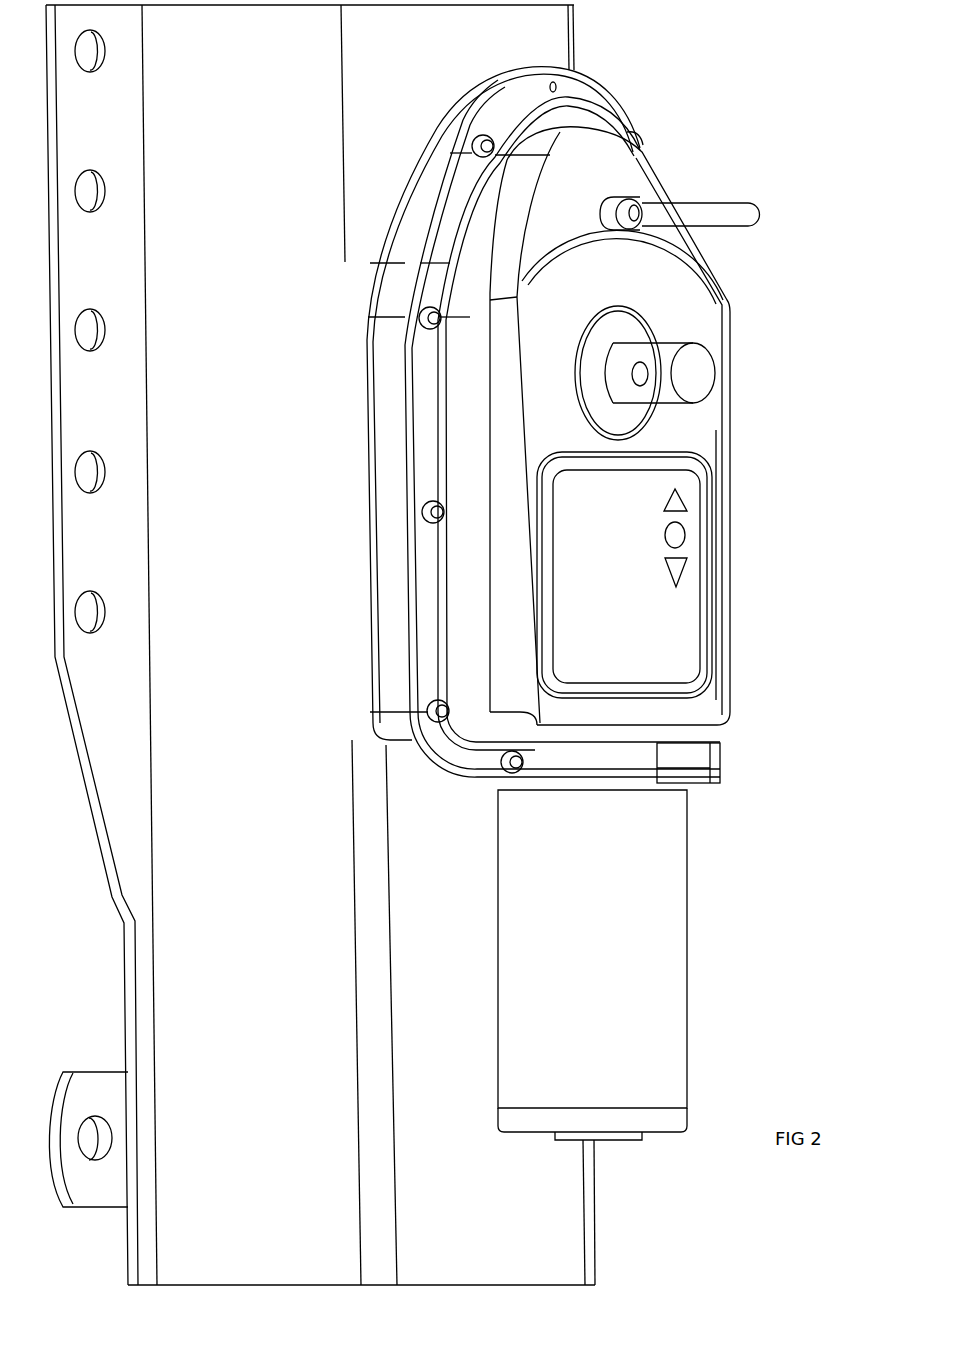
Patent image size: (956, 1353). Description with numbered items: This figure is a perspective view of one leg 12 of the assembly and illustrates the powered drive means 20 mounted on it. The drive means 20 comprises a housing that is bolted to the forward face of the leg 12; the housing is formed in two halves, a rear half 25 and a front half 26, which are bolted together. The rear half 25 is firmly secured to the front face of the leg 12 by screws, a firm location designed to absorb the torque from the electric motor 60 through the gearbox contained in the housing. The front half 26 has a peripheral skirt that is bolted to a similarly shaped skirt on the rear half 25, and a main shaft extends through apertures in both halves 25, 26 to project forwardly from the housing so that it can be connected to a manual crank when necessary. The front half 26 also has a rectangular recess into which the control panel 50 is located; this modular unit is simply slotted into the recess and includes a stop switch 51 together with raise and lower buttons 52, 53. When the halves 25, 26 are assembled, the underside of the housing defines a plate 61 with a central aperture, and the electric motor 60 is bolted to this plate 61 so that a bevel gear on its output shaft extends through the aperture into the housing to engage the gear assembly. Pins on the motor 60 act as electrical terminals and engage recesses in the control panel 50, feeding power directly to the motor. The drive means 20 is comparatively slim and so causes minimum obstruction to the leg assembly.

The leg 12 is at (552, 1267).
The powered drive means 20 is at (666, 316).
The rear half of the housing 25 is at (450, 135).
The front half of the housing 26 is at (706, 437).
The control panel 50 is at (652, 668).
The stop switch 51 is at (680, 540).
The raise button 52 is at (683, 504).
The lower button 53 is at (677, 575).
The electric motor 60 is at (665, 1065).
The plate 61 is at (708, 786).